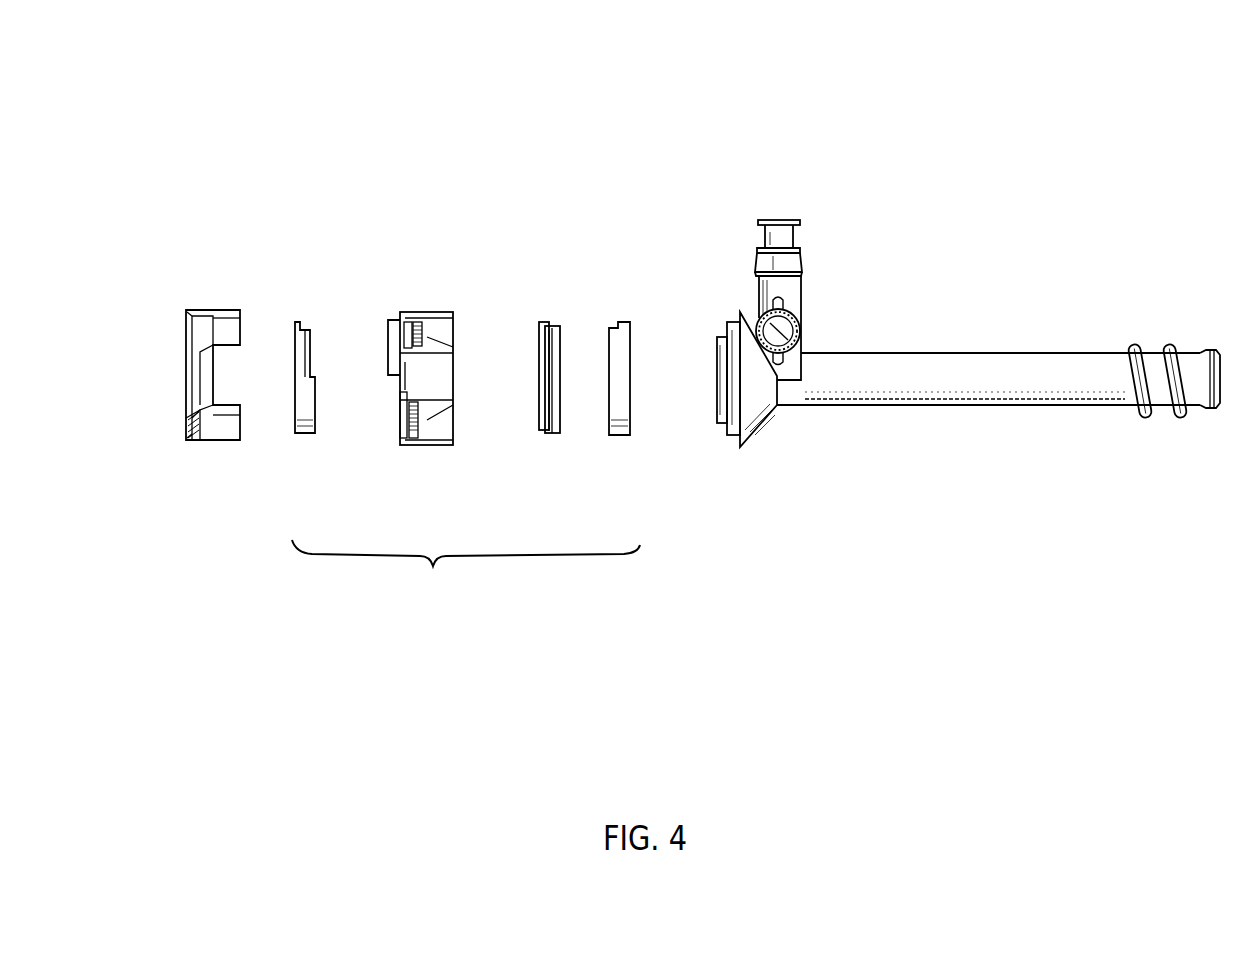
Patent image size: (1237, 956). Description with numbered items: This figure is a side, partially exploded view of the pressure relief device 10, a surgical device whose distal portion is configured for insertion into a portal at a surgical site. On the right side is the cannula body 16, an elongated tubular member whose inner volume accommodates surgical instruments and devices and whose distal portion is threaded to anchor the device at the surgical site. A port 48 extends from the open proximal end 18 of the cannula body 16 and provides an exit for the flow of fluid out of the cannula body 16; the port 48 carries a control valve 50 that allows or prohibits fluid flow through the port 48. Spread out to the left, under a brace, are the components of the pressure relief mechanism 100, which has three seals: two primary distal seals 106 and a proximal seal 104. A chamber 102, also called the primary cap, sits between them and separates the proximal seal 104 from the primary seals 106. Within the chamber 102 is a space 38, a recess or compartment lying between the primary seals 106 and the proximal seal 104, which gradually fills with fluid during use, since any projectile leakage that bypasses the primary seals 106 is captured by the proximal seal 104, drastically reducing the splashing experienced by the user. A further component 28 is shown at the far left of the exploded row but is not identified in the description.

The pressure relief device 10 is at (739, 93).
The cannula body 16 is at (968, 352).
The open proximal end 18 is at (801, 420).
The bracket 28 is at (206, 286).
The space 38 is at (455, 378).
The port 48 is at (812, 244).
The control valve 50 is at (800, 324).
The pressure relief mechanism 100 is at (466, 583).
The chamber 102 is at (427, 290).
The proximal seal 104 is at (310, 288).
The primary seals 106 is at (608, 300).